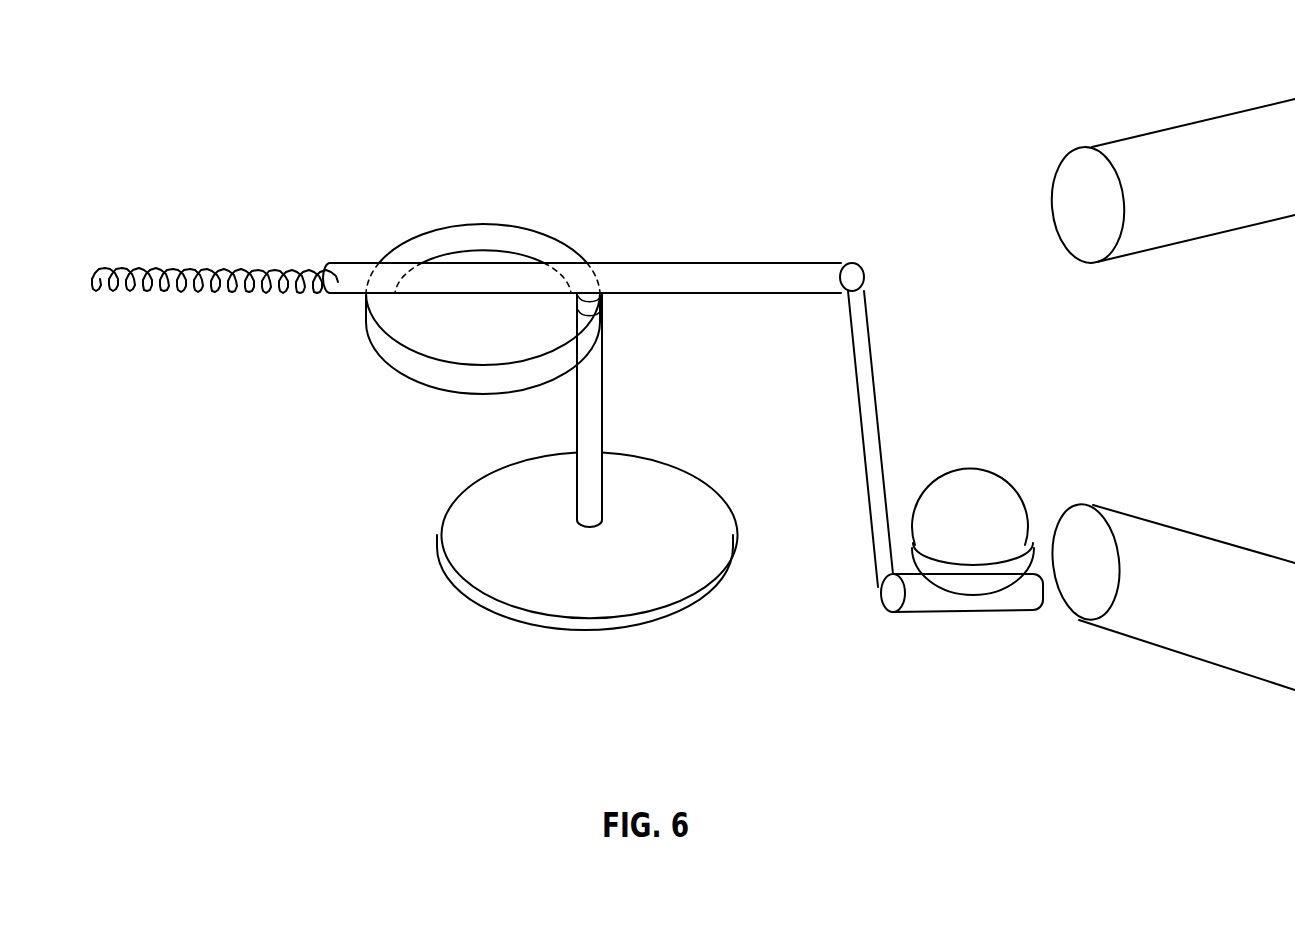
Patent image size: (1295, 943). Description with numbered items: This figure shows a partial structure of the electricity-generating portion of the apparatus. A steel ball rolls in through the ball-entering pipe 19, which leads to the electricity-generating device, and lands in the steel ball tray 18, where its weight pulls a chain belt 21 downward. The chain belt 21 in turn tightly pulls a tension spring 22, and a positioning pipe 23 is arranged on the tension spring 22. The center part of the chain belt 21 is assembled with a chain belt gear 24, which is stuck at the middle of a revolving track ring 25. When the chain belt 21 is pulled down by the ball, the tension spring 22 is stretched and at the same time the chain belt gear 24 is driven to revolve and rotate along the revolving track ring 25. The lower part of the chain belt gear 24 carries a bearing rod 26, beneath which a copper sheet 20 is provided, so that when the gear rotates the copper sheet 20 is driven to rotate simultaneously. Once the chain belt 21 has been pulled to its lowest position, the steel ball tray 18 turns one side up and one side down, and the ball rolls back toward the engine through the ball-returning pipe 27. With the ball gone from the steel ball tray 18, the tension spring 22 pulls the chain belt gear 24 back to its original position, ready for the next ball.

The steel ball tray 18 is at (968, 577).
The ball-entering pipe 19 is at (1262, 142).
The copper sheet 20 is at (583, 558).
The chain belt 21 is at (873, 435).
The tension spring 22 is at (222, 257).
The positioning pipe 23 is at (727, 280).
The chain belt gear 24 is at (598, 302).
The revolving track ring 25 is at (487, 243).
The bearing rod 26 is at (587, 413).
The ball-returning pipe 27 is at (1262, 624).